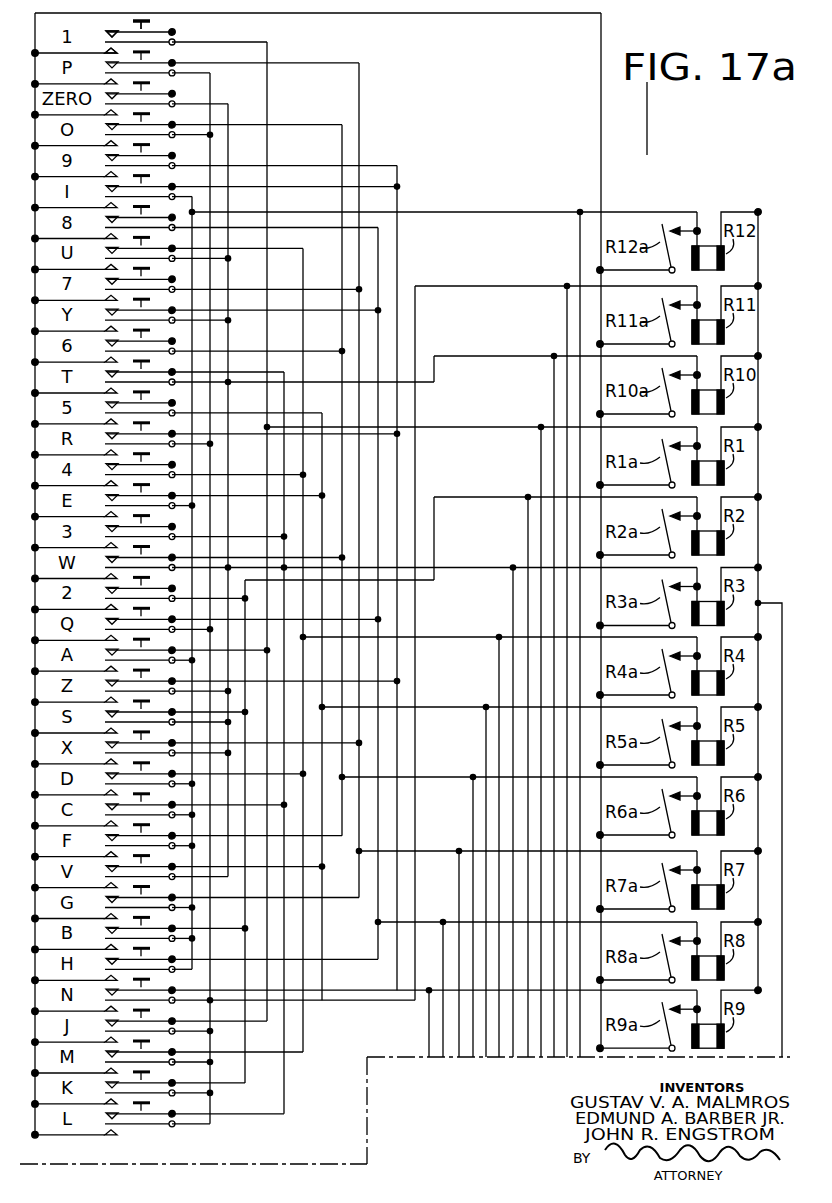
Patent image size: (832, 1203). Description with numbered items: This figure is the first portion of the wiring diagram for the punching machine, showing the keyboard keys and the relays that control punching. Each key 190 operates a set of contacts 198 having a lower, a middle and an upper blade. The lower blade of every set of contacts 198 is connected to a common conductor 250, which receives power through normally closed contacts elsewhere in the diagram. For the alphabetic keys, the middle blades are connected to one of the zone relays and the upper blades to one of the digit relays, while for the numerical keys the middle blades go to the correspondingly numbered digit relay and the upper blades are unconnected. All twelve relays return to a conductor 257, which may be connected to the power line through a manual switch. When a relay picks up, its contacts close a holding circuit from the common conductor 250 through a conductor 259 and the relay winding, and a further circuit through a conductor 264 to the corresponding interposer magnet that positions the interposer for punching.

The key 190 is at (152, 21).
The contacts 198 is at (108, 50).
The common conductor 250 is at (36, 1143).
The conductor 259 is at (601, 160).
The conductor 264 is at (486, 756).
The conductor 257 is at (782, 1032).